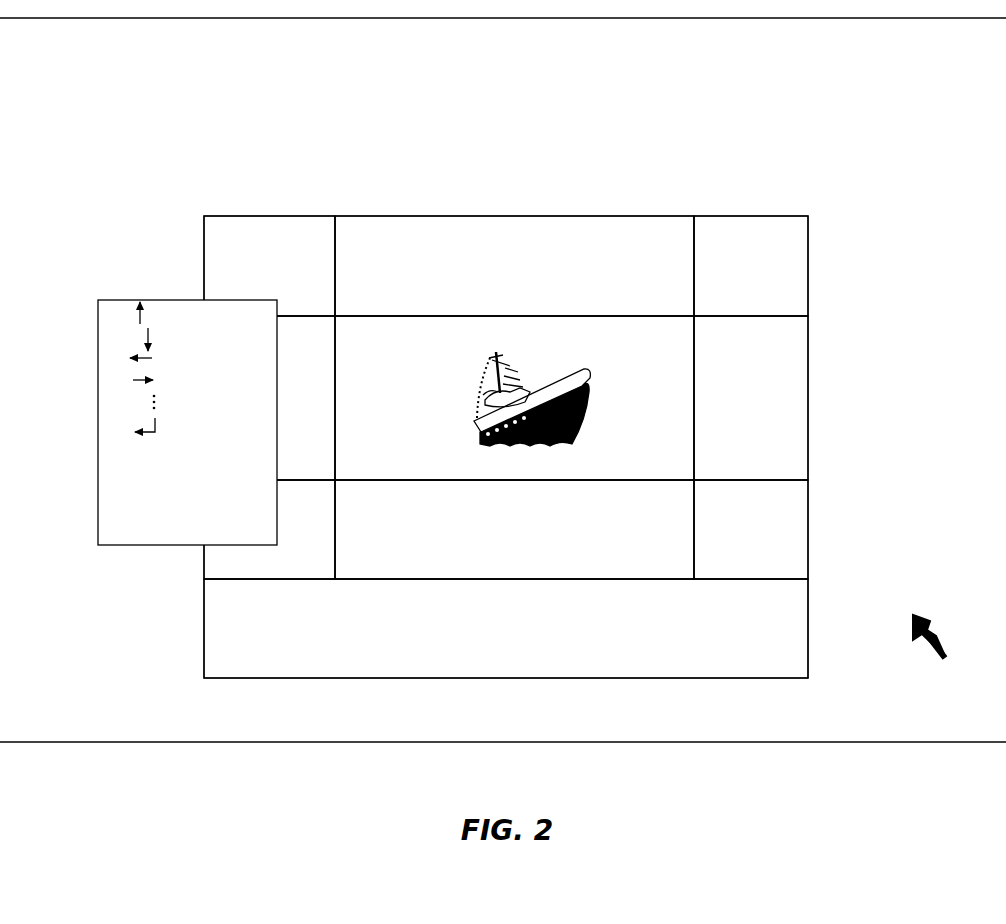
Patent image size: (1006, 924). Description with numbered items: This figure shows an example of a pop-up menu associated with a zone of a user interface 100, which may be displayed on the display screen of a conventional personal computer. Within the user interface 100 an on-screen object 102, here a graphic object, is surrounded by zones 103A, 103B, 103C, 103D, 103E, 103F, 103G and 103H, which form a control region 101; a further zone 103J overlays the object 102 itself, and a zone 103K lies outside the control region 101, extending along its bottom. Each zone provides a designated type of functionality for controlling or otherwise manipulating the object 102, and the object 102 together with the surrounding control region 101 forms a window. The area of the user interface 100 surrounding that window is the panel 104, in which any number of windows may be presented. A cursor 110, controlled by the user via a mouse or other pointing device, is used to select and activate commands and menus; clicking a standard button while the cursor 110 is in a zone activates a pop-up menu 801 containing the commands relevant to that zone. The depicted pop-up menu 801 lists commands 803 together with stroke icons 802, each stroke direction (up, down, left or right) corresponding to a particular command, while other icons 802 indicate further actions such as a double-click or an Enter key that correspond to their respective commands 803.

The user interface 100 is at (893, 775).
The control region 101 is at (843, 283).
The object 102 is at (463, 395).
The zone 103A is at (244, 278).
The zone 103B is at (498, 278).
The zone 103C is at (734, 278).
The zone 103D is at (279, 473).
The zone 103E is at (736, 408).
The zone 103F is at (280, 573).
The zone 103G is at (497, 542).
The zone 103H is at (735, 537).
The zone 103J is at (609, 406).
The zone 103K is at (482, 643).
The panel 104 is at (966, 145).
The cursor 110 is at (938, 628).
The pop-up menu 801 is at (112, 298).
The stroke icons 802 is at (128, 378).
The commands 803 is at (277, 405).